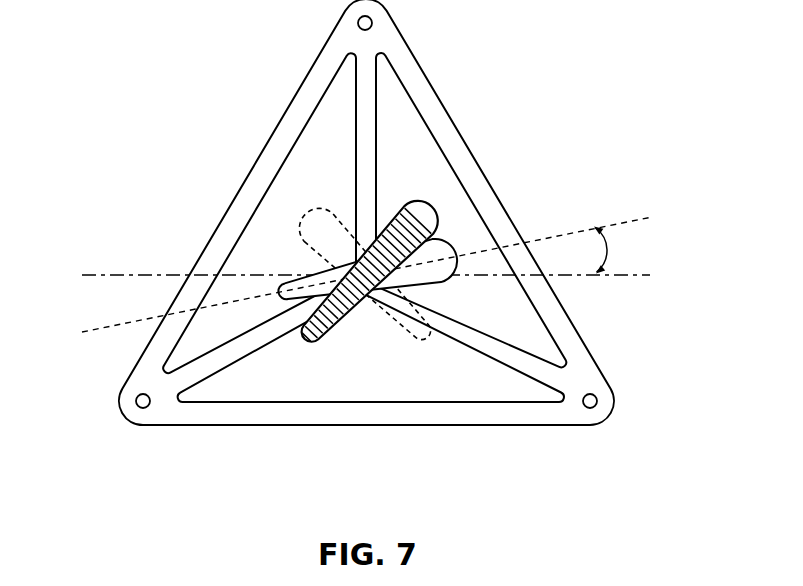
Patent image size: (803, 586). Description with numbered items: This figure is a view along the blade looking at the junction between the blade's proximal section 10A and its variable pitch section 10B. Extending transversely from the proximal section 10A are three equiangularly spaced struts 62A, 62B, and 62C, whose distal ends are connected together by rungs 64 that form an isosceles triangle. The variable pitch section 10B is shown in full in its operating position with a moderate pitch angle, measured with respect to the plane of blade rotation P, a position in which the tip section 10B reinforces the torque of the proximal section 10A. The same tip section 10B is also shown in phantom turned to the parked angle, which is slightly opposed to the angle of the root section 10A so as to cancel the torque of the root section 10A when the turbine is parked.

The proximal section 10A is at (440, 212).
The variable pitch section 10B is at (305, 212).
The strut 62A is at (377, 86).
The strut 62B is at (532, 383).
The strut 62C is at (201, 384).
The rung 64 is at (126, 378).
The plane of blade rotation P is at (607, 277).